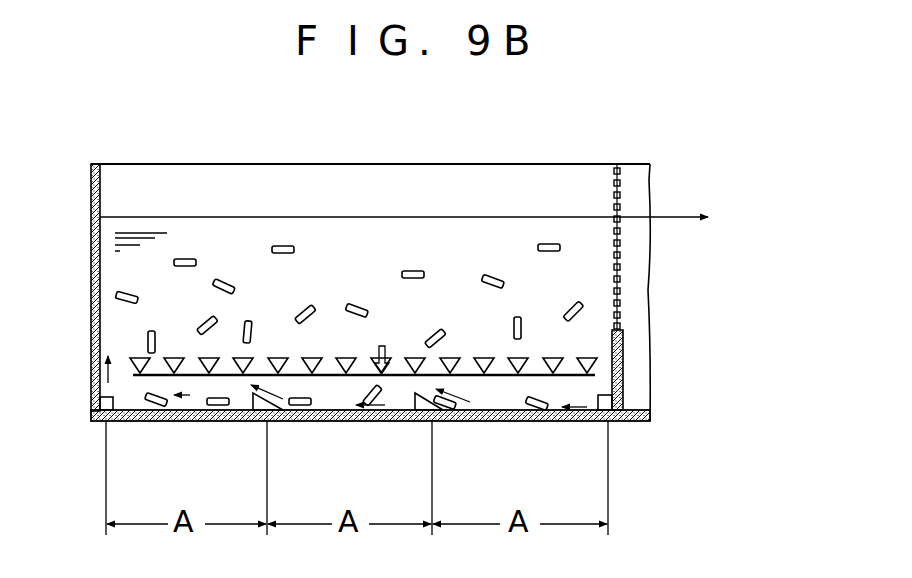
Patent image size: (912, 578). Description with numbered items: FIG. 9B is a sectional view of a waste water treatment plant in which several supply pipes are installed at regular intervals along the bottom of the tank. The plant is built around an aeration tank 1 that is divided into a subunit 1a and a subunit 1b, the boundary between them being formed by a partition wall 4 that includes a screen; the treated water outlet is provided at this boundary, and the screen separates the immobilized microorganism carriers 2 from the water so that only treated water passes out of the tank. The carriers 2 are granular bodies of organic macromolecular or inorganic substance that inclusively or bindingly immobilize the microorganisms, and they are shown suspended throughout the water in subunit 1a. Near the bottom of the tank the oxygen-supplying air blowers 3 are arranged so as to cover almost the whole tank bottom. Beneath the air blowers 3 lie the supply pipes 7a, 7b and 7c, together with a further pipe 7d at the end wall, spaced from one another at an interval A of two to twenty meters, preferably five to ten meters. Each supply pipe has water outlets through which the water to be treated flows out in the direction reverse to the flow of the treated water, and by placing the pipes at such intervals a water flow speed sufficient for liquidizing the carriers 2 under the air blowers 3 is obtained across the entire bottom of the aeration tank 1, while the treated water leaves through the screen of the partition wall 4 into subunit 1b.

The aeration tank 1 is at (345, 287).
The subunit 1a is at (487, 421).
The subunit 1b is at (633, 421).
The immobilized microorganism carriers 2 is at (283, 246).
The air blowers 3 is at (143, 370).
The partition wall 4 is at (618, 190).
The supply pipe 7a is at (599, 419).
The supply pipe 7b is at (410, 420).
The supply pipe 7c is at (255, 412).
The flow guide block 7d is at (95, 421).